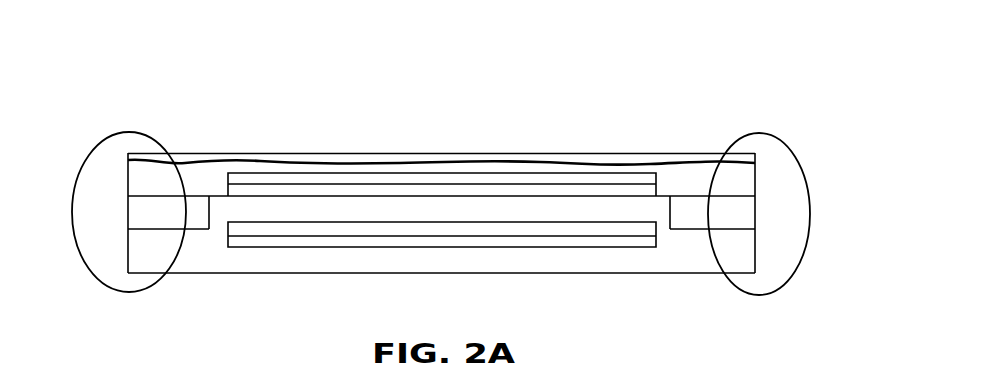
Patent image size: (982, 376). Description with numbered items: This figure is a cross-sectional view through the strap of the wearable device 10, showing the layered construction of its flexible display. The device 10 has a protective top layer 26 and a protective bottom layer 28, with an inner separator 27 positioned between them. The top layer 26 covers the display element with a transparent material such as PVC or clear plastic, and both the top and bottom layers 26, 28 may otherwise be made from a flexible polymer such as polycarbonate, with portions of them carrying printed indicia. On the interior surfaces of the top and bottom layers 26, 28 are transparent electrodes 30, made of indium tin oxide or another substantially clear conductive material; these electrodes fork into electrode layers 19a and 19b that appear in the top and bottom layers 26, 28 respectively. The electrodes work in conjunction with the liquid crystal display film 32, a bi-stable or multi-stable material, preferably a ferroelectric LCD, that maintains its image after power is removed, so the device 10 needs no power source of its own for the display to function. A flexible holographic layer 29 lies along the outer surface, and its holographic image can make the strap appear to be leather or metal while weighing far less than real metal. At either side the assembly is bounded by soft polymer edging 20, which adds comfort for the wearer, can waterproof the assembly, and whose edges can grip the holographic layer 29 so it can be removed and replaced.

The device 10 is at (494, 120).
The electrode layer 19a is at (262, 177).
The electrode layer 19b is at (317, 243).
The polymer edging 20 is at (93, 165).
The top layer 26 is at (683, 177).
The inner separator 27 is at (190, 217).
The bottom layer 28 is at (693, 253).
The flexible holographic layer 29 is at (755, 163).
The transparent electrodes 30 is at (377, 228).
The liquid crystal display film 32 is at (477, 212).